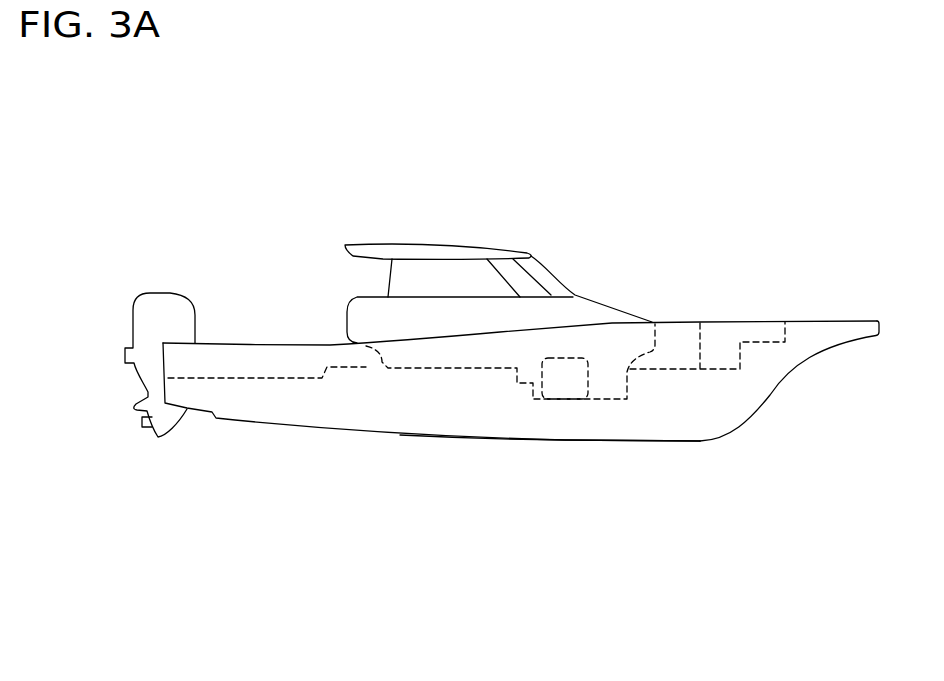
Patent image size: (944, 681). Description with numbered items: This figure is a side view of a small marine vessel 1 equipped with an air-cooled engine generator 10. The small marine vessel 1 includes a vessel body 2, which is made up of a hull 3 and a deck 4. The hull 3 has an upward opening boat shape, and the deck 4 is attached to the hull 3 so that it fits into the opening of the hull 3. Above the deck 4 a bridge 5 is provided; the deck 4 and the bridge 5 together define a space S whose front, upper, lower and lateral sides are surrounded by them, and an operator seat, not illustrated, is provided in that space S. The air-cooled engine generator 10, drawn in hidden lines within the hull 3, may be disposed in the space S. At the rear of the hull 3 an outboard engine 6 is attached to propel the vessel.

The small marine vessel 1 is at (300, 230).
The vessel body 2 is at (773, 398).
The hull 3 is at (661, 423).
The deck 4 is at (703, 322).
The bridge 5 is at (587, 290).
The outboard engine 6 is at (183, 295).
The air-cooled engine generator 10 is at (565, 402).
The space S is at (531, 358).